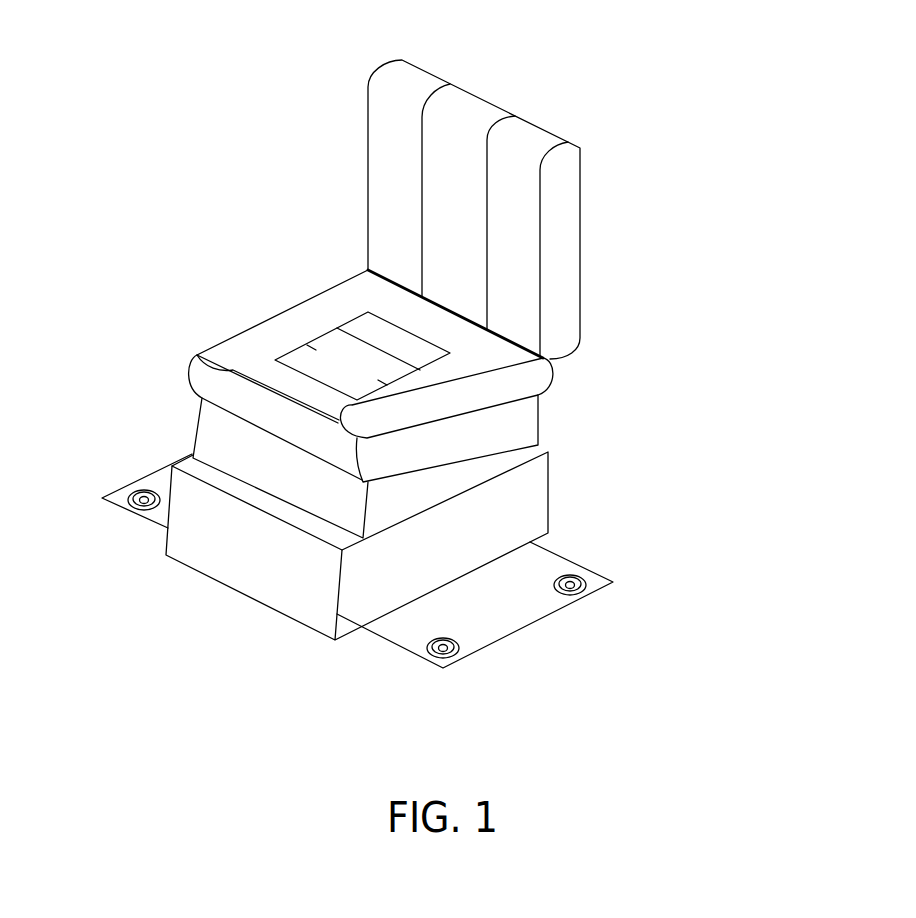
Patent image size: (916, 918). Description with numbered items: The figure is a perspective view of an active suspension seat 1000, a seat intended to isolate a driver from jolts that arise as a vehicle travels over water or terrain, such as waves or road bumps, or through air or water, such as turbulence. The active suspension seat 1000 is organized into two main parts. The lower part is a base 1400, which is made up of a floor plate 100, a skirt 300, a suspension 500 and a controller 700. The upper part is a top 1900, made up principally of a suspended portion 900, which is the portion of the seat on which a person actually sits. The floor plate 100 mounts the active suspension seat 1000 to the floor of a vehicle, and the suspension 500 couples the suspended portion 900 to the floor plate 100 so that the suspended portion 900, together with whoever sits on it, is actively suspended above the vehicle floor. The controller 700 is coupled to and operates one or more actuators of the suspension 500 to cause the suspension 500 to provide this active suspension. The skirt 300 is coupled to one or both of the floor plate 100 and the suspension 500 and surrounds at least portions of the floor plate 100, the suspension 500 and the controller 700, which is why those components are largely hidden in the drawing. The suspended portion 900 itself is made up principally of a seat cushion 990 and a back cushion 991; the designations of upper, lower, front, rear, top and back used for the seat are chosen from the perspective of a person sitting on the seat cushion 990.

The active suspension seat 1000 is at (748, 68).
The top 1900 is at (145, 62).
The base 1400 is at (742, 390).
The suspended portion 900 is at (367, 188).
The back cushion 991 is at (476, 232).
The seat cushion 990 is at (369, 377).
The controller 700 is at (576, 387).
The suspension 500 is at (576, 452).
The skirt 300 is at (272, 477).
The floor plate 100 is at (525, 628).